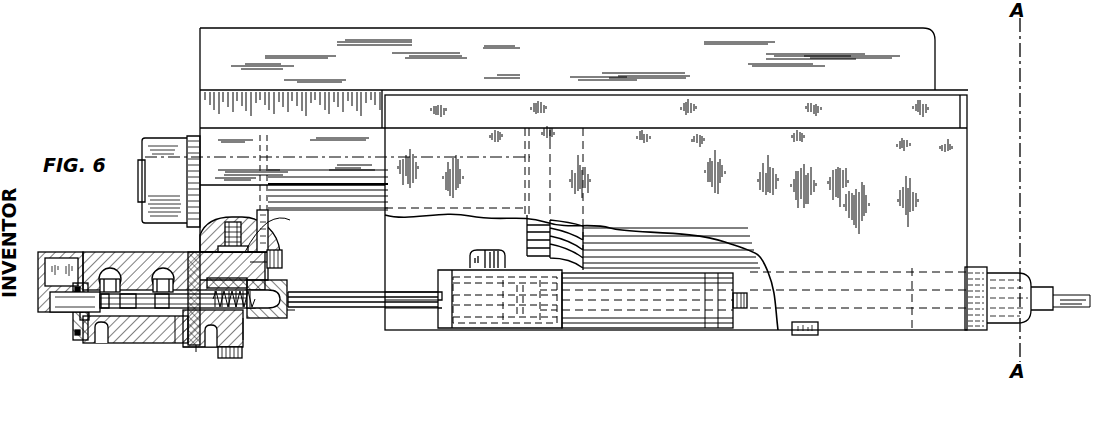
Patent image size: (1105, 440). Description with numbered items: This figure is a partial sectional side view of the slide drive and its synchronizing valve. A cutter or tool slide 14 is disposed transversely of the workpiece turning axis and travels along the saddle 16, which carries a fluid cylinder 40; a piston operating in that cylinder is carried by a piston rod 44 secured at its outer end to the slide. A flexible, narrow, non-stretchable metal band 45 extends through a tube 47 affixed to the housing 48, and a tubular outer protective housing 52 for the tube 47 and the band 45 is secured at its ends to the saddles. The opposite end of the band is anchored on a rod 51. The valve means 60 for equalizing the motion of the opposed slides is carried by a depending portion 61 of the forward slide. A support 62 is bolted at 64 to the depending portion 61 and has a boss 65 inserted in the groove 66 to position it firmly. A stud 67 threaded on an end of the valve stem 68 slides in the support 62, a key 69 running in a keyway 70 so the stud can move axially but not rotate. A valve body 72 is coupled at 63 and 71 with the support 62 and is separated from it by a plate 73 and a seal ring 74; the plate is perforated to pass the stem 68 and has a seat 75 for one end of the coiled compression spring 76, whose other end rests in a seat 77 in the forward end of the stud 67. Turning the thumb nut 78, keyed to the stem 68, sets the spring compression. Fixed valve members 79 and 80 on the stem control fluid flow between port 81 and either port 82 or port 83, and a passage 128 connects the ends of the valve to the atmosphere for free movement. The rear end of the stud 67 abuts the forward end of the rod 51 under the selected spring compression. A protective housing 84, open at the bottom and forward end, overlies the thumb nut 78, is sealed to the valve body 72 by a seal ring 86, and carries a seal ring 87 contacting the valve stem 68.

The cutter or tool slide 14 is at (584, 140).
The saddle 16 is at (556, 215).
The fluid cylinder 40 is at (594, 241).
The piston rod 44 is at (366, 208).
The band or tape 45 is at (1052, 308).
The tube 47 is at (1036, 289).
The housing 48 is at (512, 266).
The rod 51 is at (361, 307).
The tubular outer protective housing 52 is at (1000, 330).
The valve means 60 is at (125, 245).
The depending portion 61 is at (265, 244).
The support 62 is at (262, 320).
The coupling 63 is at (283, 258).
The bolt 64 is at (232, 228).
The boss 65 is at (262, 242).
The groove or depression 66 is at (265, 222).
The stud 67 is at (289, 312).
The valve stem 68 is at (289, 283).
The key 69 is at (264, 258).
The keyway 70 is at (238, 296).
The coupling 71 is at (240, 341).
The valve body 72 is at (180, 344).
The plate 73 is at (191, 262).
The seal ring 74 is at (201, 347).
The seat 75 is at (230, 358).
The coiled compression spring 76 is at (216, 250).
The seat 77 is at (250, 326).
The thumb nut 78 is at (43, 311).
The fixed valve member 79 is at (110, 345).
The fixed valve member 80 is at (163, 309).
The port 81 is at (134, 345).
The port 82 is at (110, 268).
The port 83 is at (166, 268).
The protective housing 84 is at (52, 252).
The seal ring 86 is at (84, 322).
The seal ring 87 is at (64, 318).
The passage 128 is at (100, 344).